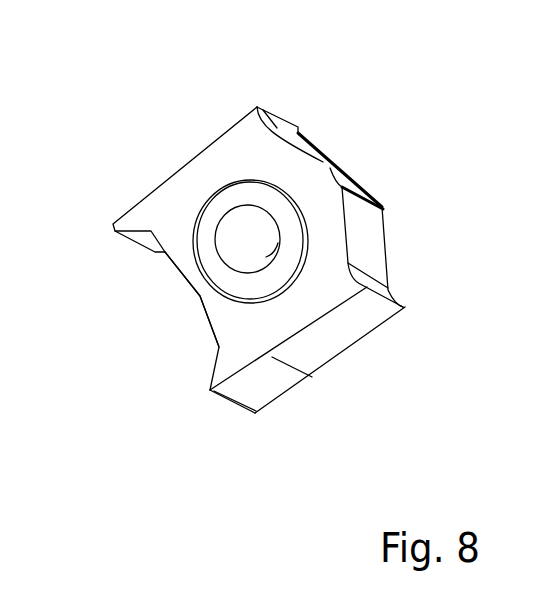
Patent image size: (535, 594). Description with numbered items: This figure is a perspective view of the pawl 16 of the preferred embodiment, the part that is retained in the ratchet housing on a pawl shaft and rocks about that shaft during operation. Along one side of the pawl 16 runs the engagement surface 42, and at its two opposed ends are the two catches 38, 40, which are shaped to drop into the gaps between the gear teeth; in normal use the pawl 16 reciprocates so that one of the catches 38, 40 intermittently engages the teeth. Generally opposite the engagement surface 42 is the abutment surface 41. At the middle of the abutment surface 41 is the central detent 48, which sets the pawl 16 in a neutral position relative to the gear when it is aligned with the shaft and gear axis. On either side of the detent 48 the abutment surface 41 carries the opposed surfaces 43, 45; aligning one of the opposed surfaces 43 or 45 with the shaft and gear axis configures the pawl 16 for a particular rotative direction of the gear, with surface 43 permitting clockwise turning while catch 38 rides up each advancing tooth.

The pawl 16 is at (180, 168).
The catch 38 is at (210, 390).
The catch 40 is at (113, 226).
The abutment surface 41 is at (307, 152).
The engagement surface 42 is at (197, 295).
The opposed surface 43 is at (257, 107).
The opposed surface 45 is at (358, 232).
The central detent 48 is at (366, 192).